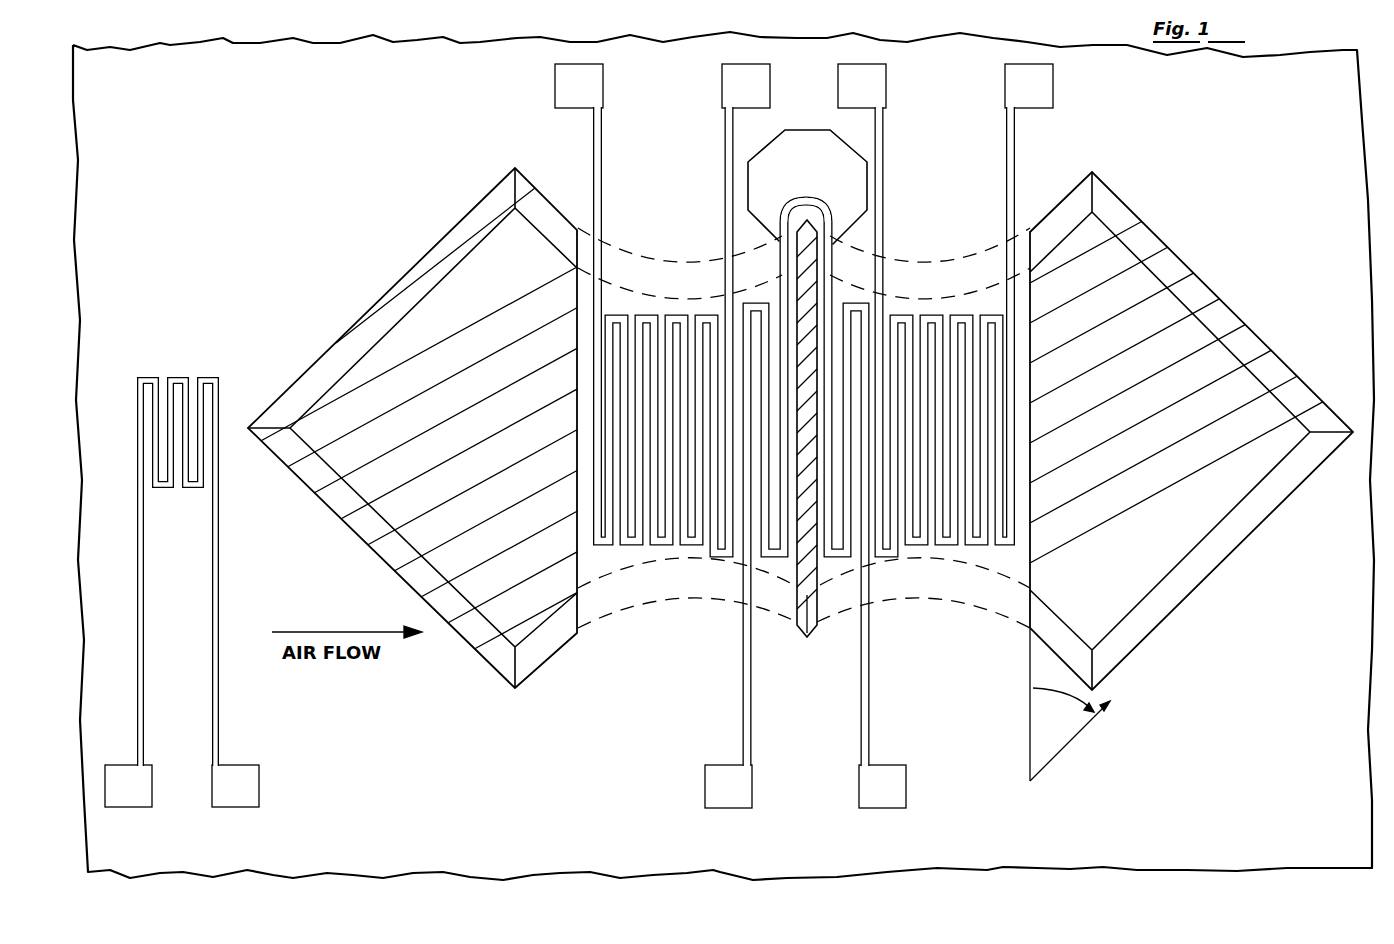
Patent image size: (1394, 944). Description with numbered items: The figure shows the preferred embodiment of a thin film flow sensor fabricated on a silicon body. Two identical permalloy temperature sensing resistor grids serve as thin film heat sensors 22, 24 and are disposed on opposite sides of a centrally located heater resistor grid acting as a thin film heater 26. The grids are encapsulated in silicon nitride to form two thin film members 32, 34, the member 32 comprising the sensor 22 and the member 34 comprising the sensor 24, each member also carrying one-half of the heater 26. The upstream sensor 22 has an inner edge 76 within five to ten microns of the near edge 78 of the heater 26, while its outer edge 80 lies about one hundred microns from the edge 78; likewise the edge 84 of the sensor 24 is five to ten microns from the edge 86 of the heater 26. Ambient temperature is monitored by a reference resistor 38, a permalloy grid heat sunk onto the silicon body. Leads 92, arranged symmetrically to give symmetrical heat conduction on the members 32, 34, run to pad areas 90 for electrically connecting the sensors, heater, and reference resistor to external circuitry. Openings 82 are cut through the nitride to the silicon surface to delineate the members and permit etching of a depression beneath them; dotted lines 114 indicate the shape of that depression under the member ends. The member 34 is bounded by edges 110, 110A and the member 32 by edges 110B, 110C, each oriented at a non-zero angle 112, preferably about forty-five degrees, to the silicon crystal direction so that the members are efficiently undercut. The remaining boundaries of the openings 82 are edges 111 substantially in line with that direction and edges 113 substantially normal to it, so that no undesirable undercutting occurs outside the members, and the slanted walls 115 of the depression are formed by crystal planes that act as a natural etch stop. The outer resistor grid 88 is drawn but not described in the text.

The thin film heat sensor 22 is at (690, 547).
The thin film heat sensor 24 is at (946, 547).
The thin film heater 26 is at (796, 182).
The thin film member 32 is at (587, 567).
The thin film member 34 is at (994, 562).
The reference resistor 38 is at (178, 376).
The inner edge of sensor resistor 22 76 is at (735, 118).
The near edge of heater resistor grid 78 is at (742, 694).
The outer edge of sensor resistor grid 22 80 is at (592, 413).
The opening 82 is at (436, 422).
The edge of sensor 24 84 is at (878, 129).
The edge of heater 26 86 is at (868, 706).
The resistor grid 88 is at (1018, 413).
The pad area 90 is at (568, 97).
The lead 92 is at (604, 118).
The edge of member 34 110 is at (1034, 322).
The edge of member 34 110A is at (890, 251).
The edge of member 32 110B is at (722, 262).
The edge of member 32 110C is at (578, 353).
The edge of opening 111 is at (392, 298).
The angle 112 is at (1033, 705).
The edge of opening 113 is at (548, 197).
The dotted line 114 is at (906, 258).
The slanted wall 115 is at (532, 227).